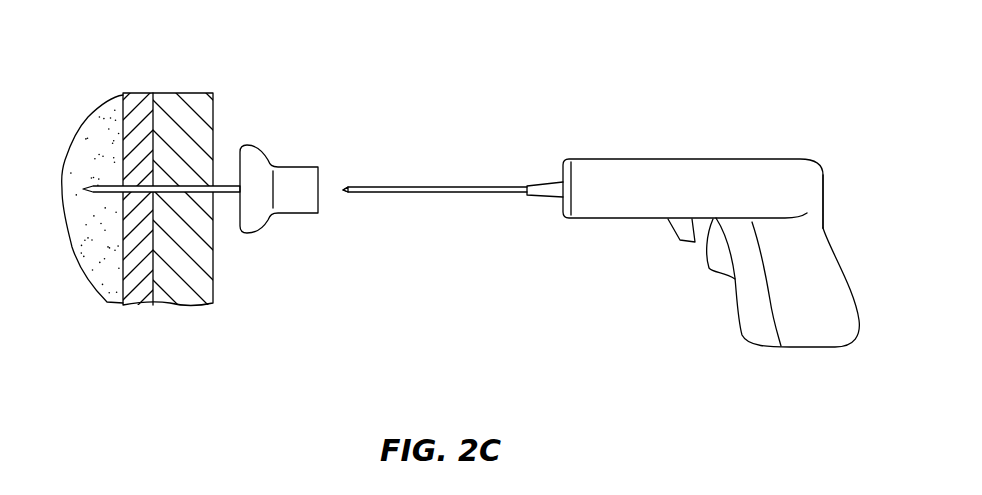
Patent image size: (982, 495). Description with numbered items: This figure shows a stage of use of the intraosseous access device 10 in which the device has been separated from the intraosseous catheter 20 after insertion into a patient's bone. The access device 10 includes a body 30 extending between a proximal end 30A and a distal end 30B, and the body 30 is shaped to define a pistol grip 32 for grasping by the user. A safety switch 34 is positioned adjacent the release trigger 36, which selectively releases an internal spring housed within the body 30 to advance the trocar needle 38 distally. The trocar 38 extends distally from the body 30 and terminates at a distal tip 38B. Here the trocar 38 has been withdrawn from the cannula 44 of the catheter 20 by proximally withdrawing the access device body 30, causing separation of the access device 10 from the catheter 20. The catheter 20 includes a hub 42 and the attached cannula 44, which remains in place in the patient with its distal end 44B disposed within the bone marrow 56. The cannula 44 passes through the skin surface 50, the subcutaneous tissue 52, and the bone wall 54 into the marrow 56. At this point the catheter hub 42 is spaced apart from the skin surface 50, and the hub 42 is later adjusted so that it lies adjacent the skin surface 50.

The intraosseous access device 10 is at (688, 138).
The intraosseous catheter 20 is at (185, 200).
The body 30 is at (718, 150).
The proximal end 30A is at (823, 175).
The distal end 30B is at (562, 168).
The pistol grip 32 is at (817, 282).
The safety switch 34 is at (670, 233).
The release trigger 36 is at (717, 257).
The trocar needle 38 is at (420, 185).
The distal tip 38B is at (343, 190).
The hub 42 is at (290, 202).
The cannula 44 is at (107, 192).
The distal end 44B is at (83, 189).
The skin surface 50 is at (164, 183).
The subcutaneous tissue 52 is at (180, 108).
The bone wall 54 is at (137, 107).
The bone marrow 56 is at (88, 145).